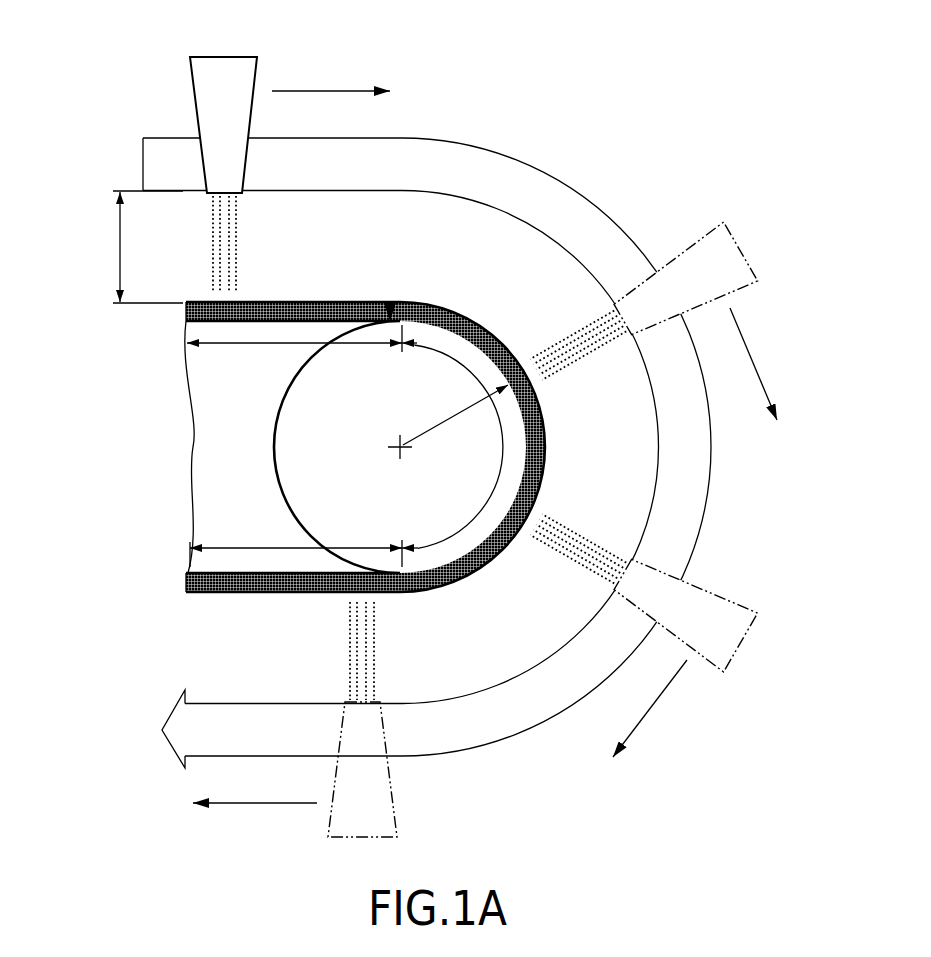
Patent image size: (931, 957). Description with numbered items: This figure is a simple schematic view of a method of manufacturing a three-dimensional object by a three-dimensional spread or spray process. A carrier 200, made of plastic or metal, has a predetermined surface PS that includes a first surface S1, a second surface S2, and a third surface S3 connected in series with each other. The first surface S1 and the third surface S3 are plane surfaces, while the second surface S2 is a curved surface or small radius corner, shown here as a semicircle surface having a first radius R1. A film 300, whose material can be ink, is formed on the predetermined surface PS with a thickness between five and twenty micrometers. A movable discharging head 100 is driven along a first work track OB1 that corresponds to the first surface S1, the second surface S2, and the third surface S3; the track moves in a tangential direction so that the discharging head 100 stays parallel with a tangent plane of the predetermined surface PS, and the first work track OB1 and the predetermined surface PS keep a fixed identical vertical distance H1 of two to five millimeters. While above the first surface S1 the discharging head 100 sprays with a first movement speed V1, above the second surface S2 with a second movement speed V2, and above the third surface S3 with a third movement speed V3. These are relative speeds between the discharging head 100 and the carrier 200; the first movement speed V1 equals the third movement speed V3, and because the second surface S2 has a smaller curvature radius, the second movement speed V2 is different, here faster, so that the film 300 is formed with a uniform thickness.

The discharging head 100 is at (224, 65).
The carrier 200 is at (202, 457).
The film 300 is at (315, 312).
The first work track OB1 is at (163, 150).
The predetermined surface PS is at (391, 310).
The vertical distance H1 is at (133, 247).
The first surface S1 is at (294, 354).
The second surface S2 is at (448, 445).
The third surface S3 is at (296, 542).
The first radius R1 is at (448, 446).
The first movement speed V1 is at (331, 74).
The second movement speed V2 is at (703, 532).
The third movement speed V3 is at (255, 822).